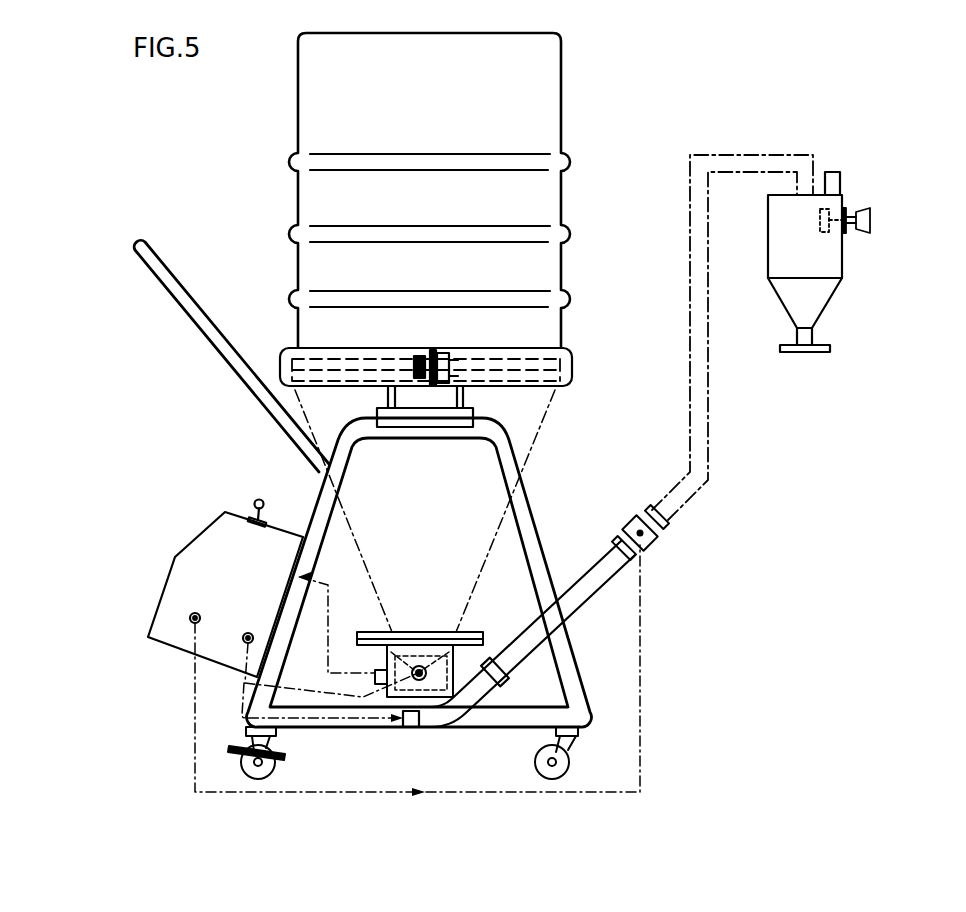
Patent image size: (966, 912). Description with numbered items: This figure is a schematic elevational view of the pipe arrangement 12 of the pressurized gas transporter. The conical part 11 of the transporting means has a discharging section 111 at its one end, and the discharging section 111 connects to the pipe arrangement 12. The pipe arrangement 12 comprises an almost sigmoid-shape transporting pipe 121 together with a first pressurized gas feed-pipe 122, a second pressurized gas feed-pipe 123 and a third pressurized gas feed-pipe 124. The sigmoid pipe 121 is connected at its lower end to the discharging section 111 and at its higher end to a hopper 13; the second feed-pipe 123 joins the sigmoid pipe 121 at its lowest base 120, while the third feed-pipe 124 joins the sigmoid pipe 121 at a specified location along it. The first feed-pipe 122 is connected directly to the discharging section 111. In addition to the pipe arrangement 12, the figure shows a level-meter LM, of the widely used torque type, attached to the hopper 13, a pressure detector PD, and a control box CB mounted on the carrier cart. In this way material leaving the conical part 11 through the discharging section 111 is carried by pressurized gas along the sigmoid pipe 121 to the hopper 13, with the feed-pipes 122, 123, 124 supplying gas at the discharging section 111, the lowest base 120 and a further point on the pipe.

The conical part 11 is at (533, 447).
The pipe arrangement 12 is at (516, 663).
The hopper 13 is at (768, 250).
The discharging section 111 is at (456, 672).
The lowest base 120 is at (440, 730).
The sigmoid-shape transporting pipe 121 is at (688, 500).
The first pressurized gas feed-pipe 122 is at (310, 718).
The second pressurized gas feed-pipe 123 is at (357, 718).
The third pressurized gas feed-pipe 124 is at (640, 690).
The control box CB is at (175, 593).
The pressure detector PD is at (330, 585).
The level-meter LM is at (870, 219).